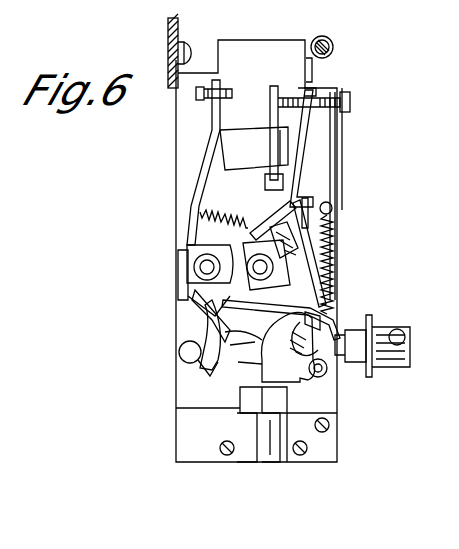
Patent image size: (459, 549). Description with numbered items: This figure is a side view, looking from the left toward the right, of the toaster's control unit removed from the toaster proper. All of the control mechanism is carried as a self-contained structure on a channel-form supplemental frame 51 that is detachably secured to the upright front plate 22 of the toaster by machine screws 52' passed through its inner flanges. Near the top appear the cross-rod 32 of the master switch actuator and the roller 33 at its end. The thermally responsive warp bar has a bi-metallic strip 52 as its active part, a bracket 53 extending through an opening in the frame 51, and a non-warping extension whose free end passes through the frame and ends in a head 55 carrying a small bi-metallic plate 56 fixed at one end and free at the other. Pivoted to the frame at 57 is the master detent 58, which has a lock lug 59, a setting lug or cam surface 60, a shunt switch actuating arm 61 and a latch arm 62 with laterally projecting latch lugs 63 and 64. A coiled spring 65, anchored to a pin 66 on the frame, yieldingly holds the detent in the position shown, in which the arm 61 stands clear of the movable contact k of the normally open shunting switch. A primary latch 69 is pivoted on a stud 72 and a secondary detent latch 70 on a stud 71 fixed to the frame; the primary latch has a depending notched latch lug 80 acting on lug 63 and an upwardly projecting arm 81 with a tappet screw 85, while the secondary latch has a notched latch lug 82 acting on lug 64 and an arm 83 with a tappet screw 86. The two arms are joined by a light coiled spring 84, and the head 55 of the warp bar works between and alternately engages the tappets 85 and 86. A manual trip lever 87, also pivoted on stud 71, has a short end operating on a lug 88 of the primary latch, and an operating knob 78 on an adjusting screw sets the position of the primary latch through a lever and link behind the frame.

The front plate 22 is at (168, 31).
The machine screws 52' is at (201, 36).
The cross-rod 32 is at (334, 42).
The roller 33 is at (333, 50).
The tappet screw 85 is at (200, 100).
The upwardly projecting arm 81 is at (203, 188).
The bi-metallic plate 56 is at (275, 88).
The tappet screw 86 is at (350, 105).
The upwardly projecting arm 83 is at (337, 125).
The head 55 is at (270, 147).
The supplemental frame 51 is at (333, 150).
The light coiled spring 84 is at (233, 210).
The shunt switch actuating arm 61 is at (330, 236).
The coiled spring 65 is at (336, 262).
The pin 66 is at (332, 206).
The movable contact k is at (333, 193).
The lug 88 is at (210, 255).
The primary latch 69 is at (188, 264).
The secondary detent latch 70 is at (263, 272).
The notched latch lug 82 is at (281, 320).
The stud 72 is at (198, 280).
The stud 71 is at (190, 298).
The notched latch lug 80 is at (192, 305).
The latch arm 62 is at (180, 351).
The latch lug 63 is at (200, 366).
The latch lug 64 is at (212, 377).
The master detent 58 is at (289, 347).
The pivot 57 is at (327, 376).
The lock lug 59 is at (333, 310).
The setting lug or cam surface 60 is at (330, 320).
The trip lever 87 is at (380, 330).
The operating knob 78 is at (404, 360).
The bi-metallic strip 52 is at (288, 424).
The bracket 53 is at (248, 462).